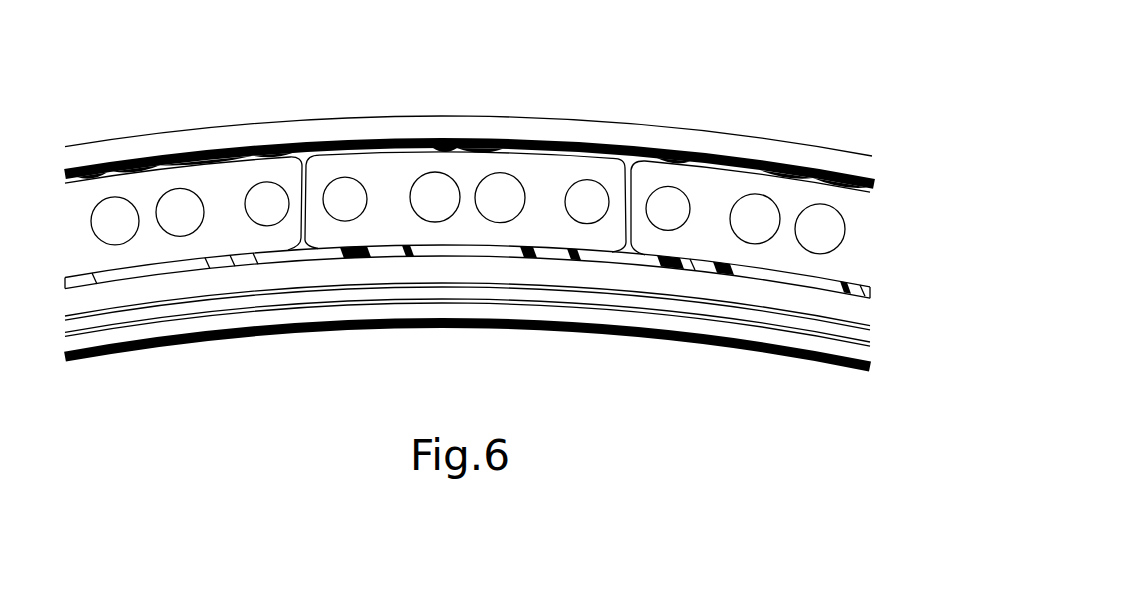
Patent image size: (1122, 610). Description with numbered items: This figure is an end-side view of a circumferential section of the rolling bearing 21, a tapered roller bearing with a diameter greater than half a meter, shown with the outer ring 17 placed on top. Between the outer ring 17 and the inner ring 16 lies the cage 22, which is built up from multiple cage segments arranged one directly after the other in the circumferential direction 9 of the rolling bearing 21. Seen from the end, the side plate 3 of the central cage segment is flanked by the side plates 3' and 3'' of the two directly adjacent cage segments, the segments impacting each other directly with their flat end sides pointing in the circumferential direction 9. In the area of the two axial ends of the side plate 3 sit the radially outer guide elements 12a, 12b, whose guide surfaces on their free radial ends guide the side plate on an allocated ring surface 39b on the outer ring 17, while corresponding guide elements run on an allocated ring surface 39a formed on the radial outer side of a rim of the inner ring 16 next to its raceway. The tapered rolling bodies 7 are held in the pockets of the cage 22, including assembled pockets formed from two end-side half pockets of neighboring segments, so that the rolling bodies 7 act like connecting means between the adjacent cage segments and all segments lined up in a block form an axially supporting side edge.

The circumferential direction 9 is at (693, 65).
The cage 22 is at (524, 72).
The rolling bearing 21 is at (631, 68).
The outer ring 17 is at (217, 140).
The tapered rolling body 7 is at (452, 150).
The ring surface on outer ring 39b is at (372, 163).
The ring surface on inner ring 39a is at (375, 233).
The inner ring 16 is at (303, 273).
The radially outer guide element 12a is at (318, 152).
The radially outer guide element 12b is at (599, 158).
The side plate of adjacent cage segment 3' is at (177, 201).
The side plate 3 is at (466, 194).
The side plate of further adjacent cage segment 3'' is at (757, 207).